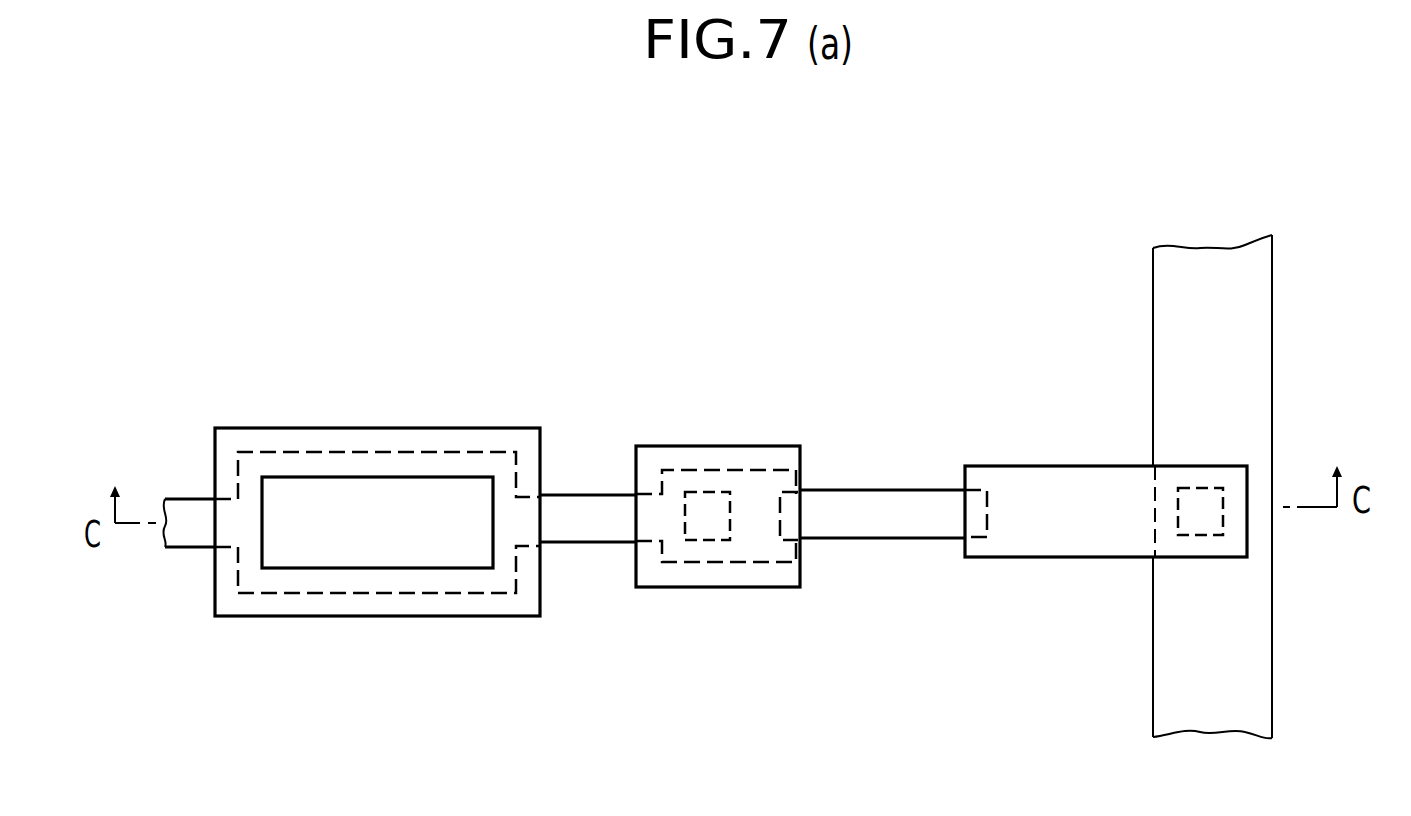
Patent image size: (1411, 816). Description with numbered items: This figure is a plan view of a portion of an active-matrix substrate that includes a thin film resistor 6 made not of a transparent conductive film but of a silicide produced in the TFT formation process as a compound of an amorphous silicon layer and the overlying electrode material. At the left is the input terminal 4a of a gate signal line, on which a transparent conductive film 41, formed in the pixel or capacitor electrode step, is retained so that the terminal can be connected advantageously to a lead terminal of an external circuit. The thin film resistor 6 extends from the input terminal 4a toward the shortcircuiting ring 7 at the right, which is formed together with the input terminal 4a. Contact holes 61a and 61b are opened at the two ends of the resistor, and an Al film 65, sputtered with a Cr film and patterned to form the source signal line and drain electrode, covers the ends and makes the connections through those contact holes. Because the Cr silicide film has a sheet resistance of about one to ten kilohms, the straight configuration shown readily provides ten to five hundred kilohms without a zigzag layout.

The transparent conductive film 41 is at (327, 498).
The input terminal of gate signal line 4a is at (425, 463).
The contact hole 61a is at (708, 512).
The Al film 65 is at (780, 458).
The thin film resistor 6 is at (900, 486).
The contact hole 61b is at (1215, 503).
The shortcircuiting ring 7 is at (1253, 365).